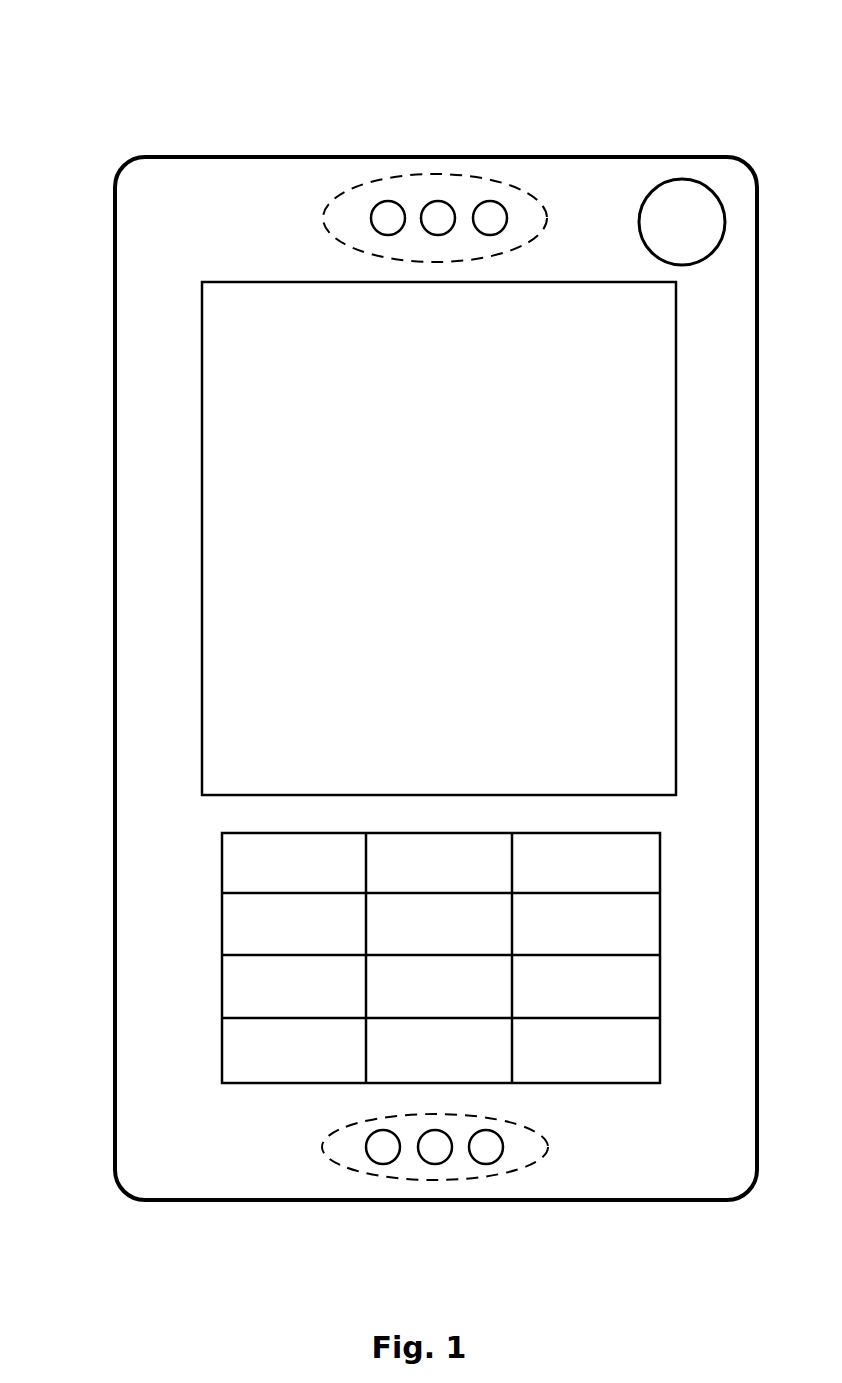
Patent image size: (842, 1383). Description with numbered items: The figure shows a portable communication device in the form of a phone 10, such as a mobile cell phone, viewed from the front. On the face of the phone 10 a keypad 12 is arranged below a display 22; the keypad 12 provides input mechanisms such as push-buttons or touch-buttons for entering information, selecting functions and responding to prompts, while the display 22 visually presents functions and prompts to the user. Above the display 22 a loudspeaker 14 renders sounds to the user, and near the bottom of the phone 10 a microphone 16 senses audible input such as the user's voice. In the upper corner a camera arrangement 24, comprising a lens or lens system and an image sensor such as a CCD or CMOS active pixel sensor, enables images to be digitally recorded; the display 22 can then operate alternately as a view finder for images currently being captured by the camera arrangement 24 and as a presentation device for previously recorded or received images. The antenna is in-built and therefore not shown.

The phone 10 is at (176, 88).
The keypad 12 is at (243, 871).
The loudspeaker 14 is at (386, 178).
The microphone 16 is at (353, 1168).
The display 22 is at (217, 360).
The camera arrangement 24 is at (670, 192).